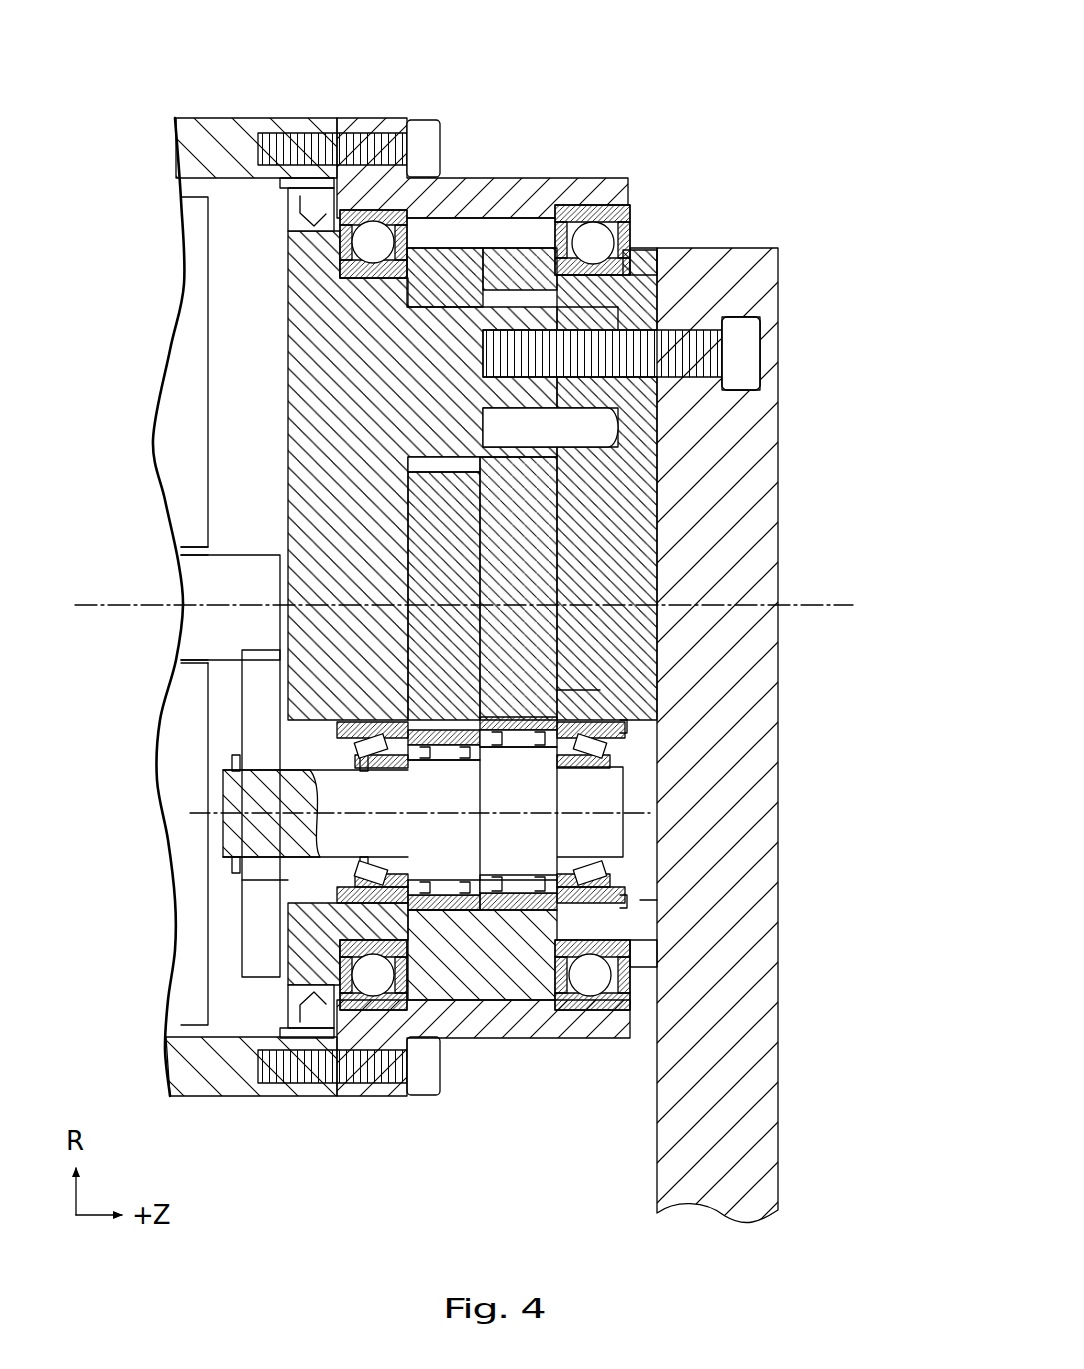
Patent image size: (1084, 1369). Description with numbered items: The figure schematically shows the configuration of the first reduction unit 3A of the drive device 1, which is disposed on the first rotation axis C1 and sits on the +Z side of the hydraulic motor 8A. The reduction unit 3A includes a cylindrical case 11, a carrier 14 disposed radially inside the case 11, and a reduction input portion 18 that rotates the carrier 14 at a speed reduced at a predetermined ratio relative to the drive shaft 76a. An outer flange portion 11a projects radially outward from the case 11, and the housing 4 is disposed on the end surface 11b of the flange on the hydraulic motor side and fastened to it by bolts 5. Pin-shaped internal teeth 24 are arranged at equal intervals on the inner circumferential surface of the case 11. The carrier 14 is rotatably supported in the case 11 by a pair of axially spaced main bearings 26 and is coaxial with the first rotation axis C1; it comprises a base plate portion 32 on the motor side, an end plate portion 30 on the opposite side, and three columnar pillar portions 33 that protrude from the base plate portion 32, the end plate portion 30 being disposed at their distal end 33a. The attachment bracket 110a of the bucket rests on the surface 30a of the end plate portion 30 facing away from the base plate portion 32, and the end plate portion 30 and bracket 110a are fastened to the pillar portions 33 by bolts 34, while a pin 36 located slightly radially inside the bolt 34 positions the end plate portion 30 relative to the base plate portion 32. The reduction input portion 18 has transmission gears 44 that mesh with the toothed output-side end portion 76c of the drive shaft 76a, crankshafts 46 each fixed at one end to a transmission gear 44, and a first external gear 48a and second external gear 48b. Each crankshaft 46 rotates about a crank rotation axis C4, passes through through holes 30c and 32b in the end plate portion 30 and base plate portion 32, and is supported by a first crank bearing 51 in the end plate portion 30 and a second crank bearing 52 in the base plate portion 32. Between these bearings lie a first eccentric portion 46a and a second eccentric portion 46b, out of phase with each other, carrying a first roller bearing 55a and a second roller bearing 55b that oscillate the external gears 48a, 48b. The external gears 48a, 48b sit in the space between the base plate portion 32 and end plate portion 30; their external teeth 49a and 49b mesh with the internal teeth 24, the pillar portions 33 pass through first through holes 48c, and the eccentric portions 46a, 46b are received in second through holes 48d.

The drive device 1 is at (524, 100).
The first reduction unit 3A is at (657, 192).
The housing 4 is at (228, 118).
The bolts 5 is at (424, 118).
The hydraulic motor 8A is at (175, 378).
The case 11 is at (598, 178).
The outer flange portion 11a is at (366, 118).
The end surface 11b is at (300, 178).
The carrier 14 is at (286, 293).
The reduction input portion 18 is at (233, 936).
The internal teeth 24 is at (540, 230).
The main bearings 26 is at (322, 1045).
The end plate portion 30 is at (628, 500).
The one surface 30a is at (560, 690).
The through holes 30c is at (640, 905).
The base plate portion 32 is at (290, 462).
The through holes 32b is at (300, 878).
The pillar portions 33 is at (490, 290).
The distal end 33a is at (560, 320).
The bolts 34 is at (770, 350).
The pin 36 is at (625, 420).
The transmission gears 44 is at (258, 757).
The crankshafts 46 is at (598, 832).
The first eccentric portion 46a is at (660, 716).
The second eccentric portion 46b is at (380, 760).
The first external gear 48a is at (548, 965).
The second external gear 48b is at (456, 940).
The first through holes 48c is at (440, 480).
The second through holes 48d is at (528, 885).
The external teeth 49a is at (590, 245).
The external teeth 49b is at (445, 232).
The first crank bearing 51 is at (528, 735).
The second crank bearing 52 is at (260, 812).
The first roller bearing 55a is at (506, 960).
The second roller bearing 55b is at (386, 1040).
The drive shaft 76a is at (242, 562).
The output-side end portion 76c is at (236, 713).
The attachment bracket 110a is at (778, 1012).
The first rotation axis C1 is at (778, 608).
The crank rotation axis C4 is at (690, 812).